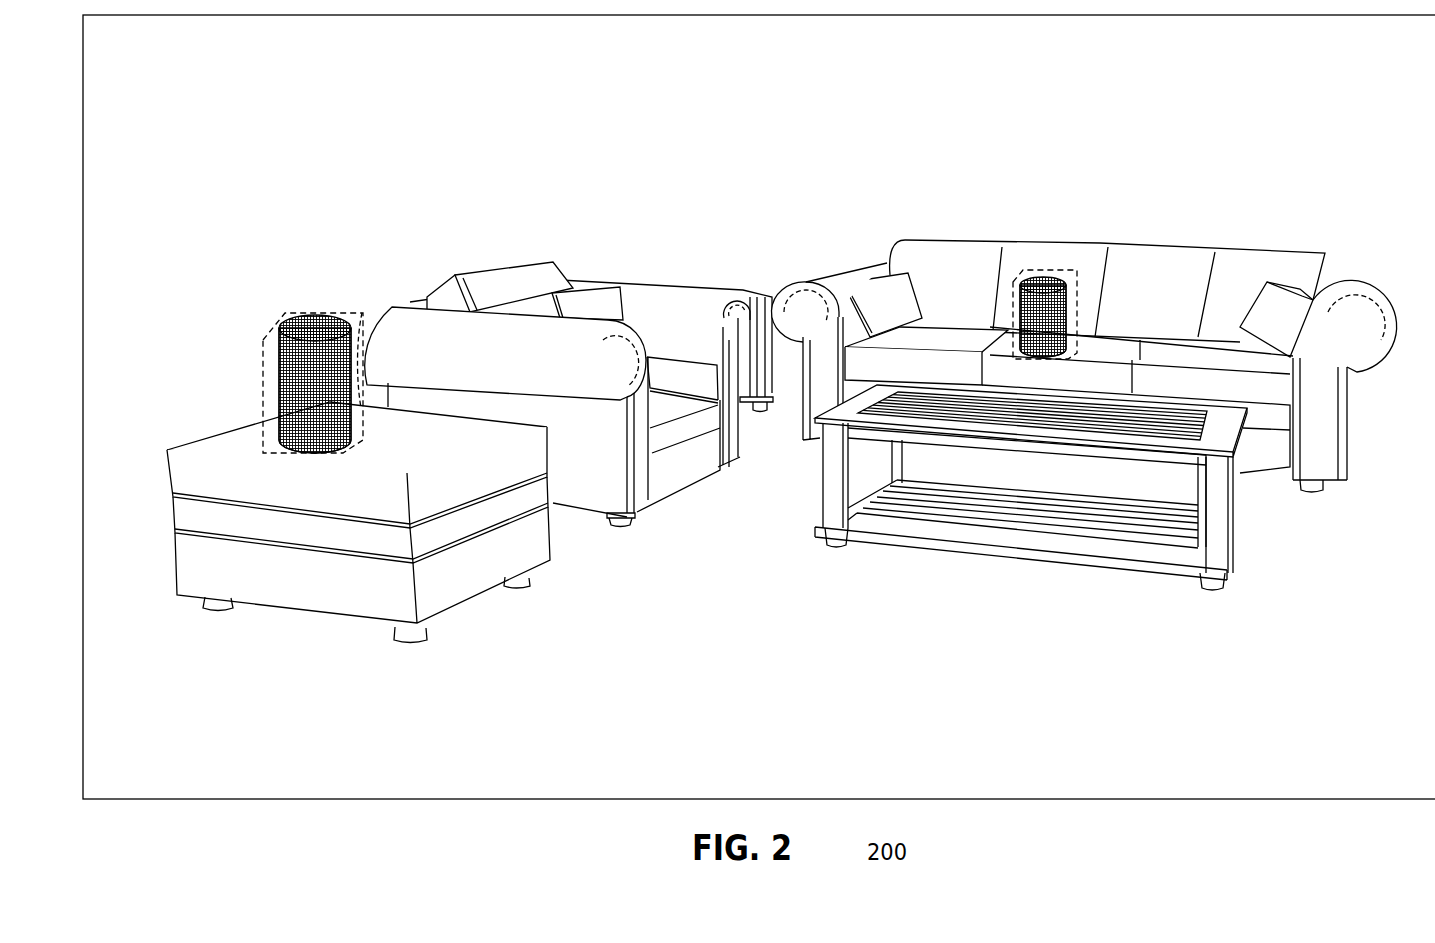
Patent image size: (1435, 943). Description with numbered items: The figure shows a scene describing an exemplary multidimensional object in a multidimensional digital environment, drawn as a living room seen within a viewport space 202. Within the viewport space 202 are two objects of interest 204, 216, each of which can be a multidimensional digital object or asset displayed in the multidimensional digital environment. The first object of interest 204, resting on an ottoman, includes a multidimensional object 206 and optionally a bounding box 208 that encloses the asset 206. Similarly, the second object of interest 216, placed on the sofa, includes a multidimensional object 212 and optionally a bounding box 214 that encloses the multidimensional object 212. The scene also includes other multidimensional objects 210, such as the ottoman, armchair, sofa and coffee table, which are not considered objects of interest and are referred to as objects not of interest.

The viewport space 202 is at (182, 71).
The object of interest 204 is at (313, 395).
The multidimensional object 206 is at (320, 330).
The bounding box 208 is at (267, 387).
The other multidimensional objects 210 is at (952, 267).
The multidimensional object 212 is at (1050, 282).
The bounding box 214 is at (1017, 302).
The object of interest 216 is at (1037, 330).